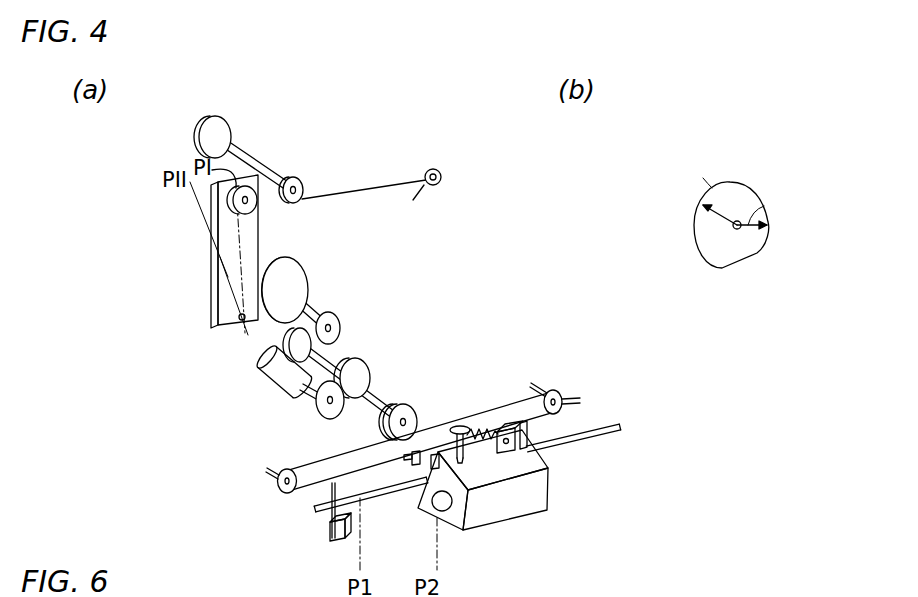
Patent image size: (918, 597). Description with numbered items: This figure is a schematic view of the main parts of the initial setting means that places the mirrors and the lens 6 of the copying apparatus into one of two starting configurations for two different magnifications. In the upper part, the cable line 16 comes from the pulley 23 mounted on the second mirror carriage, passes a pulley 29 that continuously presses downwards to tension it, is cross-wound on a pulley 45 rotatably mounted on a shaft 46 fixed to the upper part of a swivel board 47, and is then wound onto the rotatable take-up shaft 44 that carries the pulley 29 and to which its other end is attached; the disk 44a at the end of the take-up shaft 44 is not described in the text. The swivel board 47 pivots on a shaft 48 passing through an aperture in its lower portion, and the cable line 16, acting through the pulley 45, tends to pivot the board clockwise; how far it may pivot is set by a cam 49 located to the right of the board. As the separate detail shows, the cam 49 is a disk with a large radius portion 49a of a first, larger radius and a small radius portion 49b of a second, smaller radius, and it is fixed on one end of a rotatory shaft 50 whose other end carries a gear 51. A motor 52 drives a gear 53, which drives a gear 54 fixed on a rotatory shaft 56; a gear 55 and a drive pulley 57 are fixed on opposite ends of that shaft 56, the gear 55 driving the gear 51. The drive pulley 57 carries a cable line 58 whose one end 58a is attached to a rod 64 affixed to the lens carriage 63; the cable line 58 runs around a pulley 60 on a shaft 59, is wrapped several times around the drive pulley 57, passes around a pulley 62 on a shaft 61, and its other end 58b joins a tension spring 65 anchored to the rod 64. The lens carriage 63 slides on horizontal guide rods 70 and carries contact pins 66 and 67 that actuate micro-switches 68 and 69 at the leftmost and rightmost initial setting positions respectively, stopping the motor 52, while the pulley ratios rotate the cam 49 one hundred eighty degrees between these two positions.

The lens 6 is at (443, 505).
The cable line 16 is at (375, 188).
The pulley 23 is at (438, 170).
The pulley 29 is at (300, 180).
The take-up shaft 44 is at (248, 152).
The disk 44a is at (228, 122).
The pulley 45 is at (253, 211).
The shaft 46 is at (232, 200).
The swivel board 47 is at (208, 225).
The shaft 48 is at (237, 320).
The cam 49 is at (292, 272).
The large radius portion 49a is at (697, 238).
The small radius portion 49b is at (757, 253).
The rotatory shaft 50 is at (318, 315).
The gear 51 is at (337, 323).
The motor 52 is at (276, 370).
The gear 53 is at (322, 407).
The gear 54 is at (362, 372).
The gear 55 is at (288, 338).
The rotatory shaft 56 is at (374, 391).
The drive pulley 57 is at (408, 416).
The cable line 58 is at (323, 458).
The one end of cable line 58 58a is at (445, 465).
The other end of cable line 58 58b is at (490, 432).
The shaft 59 is at (278, 485).
The pulley 60 is at (288, 494).
The shaft 61 is at (581, 401).
The pulley 62 is at (558, 398).
The lens carriage 63 is at (540, 512).
The rod 64 is at (462, 462).
The tension spring 65 is at (459, 428).
The contact pin 66 is at (414, 467).
The contact pin 67 is at (503, 452).
The micro-switch 68 is at (340, 541).
The micro-switch 69 is at (530, 436).
The horizontal guide rods 70 is at (392, 495).